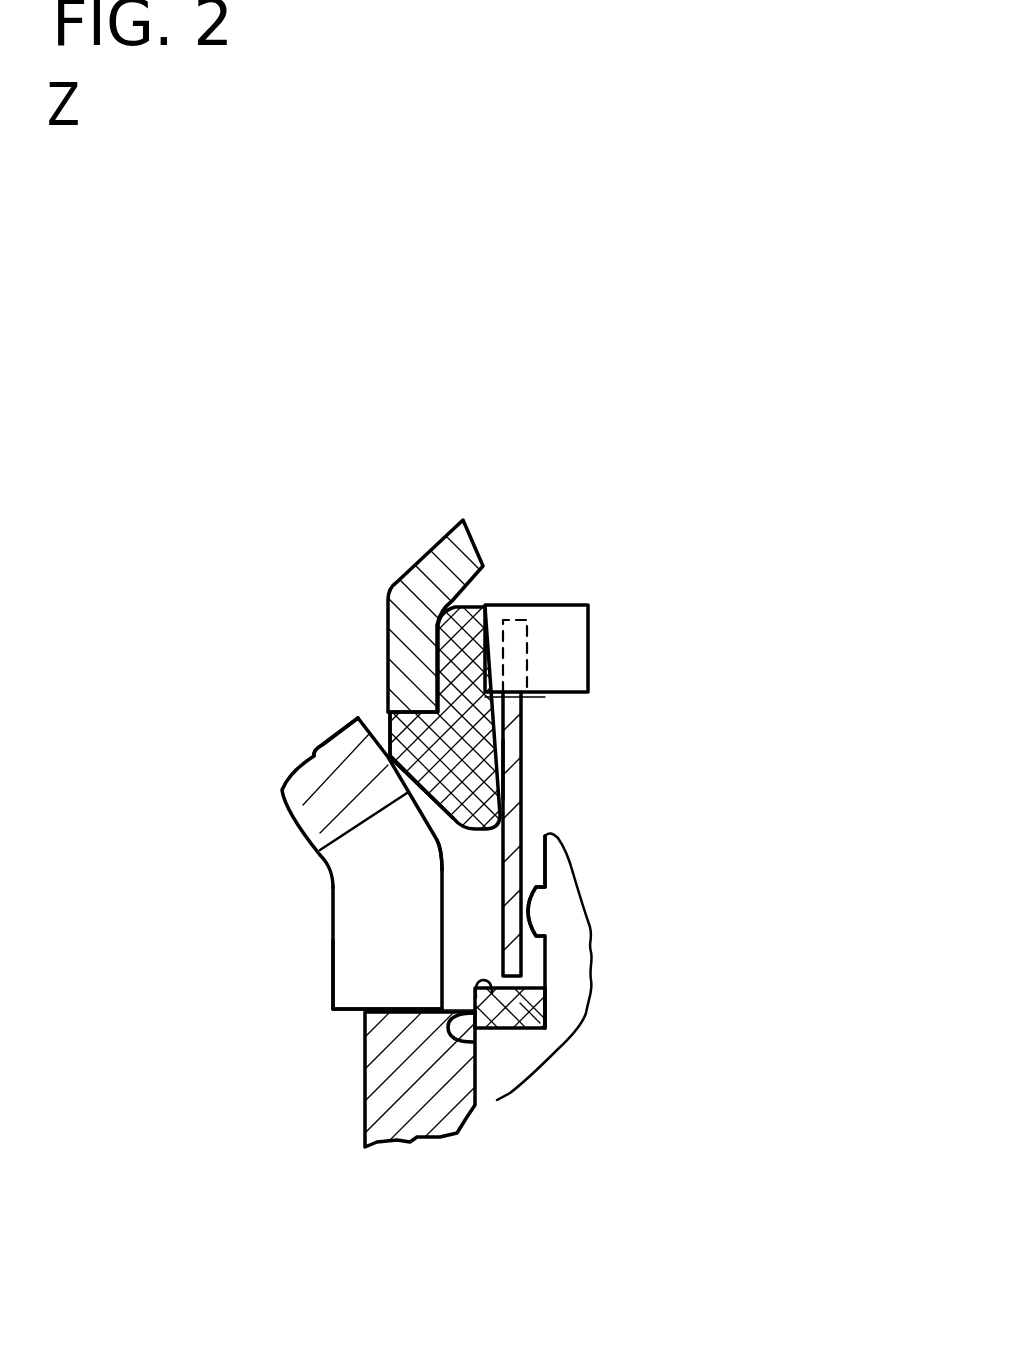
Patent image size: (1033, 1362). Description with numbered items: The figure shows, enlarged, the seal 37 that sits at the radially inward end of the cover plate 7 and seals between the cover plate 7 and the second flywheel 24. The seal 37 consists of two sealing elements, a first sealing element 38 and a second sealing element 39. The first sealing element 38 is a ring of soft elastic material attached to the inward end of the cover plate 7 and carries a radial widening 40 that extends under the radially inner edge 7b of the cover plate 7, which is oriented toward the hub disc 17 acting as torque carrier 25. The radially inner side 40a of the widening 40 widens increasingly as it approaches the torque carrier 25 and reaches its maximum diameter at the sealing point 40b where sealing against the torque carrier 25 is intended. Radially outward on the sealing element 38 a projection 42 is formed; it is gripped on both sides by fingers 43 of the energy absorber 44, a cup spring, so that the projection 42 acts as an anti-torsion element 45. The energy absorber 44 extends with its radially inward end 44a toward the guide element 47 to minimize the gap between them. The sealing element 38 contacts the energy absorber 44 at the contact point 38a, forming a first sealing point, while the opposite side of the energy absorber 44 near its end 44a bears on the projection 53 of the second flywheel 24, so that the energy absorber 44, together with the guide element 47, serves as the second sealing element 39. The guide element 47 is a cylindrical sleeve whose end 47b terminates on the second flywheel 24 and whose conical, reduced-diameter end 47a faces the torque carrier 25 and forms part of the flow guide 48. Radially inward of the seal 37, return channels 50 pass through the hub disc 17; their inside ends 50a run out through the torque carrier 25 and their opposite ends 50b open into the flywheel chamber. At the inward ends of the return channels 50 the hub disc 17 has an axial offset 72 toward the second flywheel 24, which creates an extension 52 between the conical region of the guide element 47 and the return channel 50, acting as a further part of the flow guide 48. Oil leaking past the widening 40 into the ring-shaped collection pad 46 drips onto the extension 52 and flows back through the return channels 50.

The cover plate 7 is at (452, 562).
The radially inner edge 7b is at (405, 706).
The hub disc 17 is at (303, 785).
The second flywheel 24 is at (520, 1070).
The torque carrier 25 is at (327, 733).
The seal 37 is at (612, 783).
The first sealing element 38 is at (333, 872).
The contact point 38a is at (522, 775).
The second sealing element 39 is at (547, 962).
The radial widening 40 is at (445, 790).
The radially inner side 40a is at (400, 788).
The sealing point 40b is at (383, 757).
The projection 42 is at (568, 635).
The fingers 43 is at (500, 697).
The energy absorber 44 is at (527, 825).
The radially inward end 44a is at (532, 917).
The anti-torsion element 45 is at (535, 623).
The ring-shaped collection pad 46 is at (467, 882).
The guide element 47 is at (550, 1018).
The conical end 47a is at (472, 1042).
The end on second flywheel 47b is at (552, 992).
The flow guide 48 is at (530, 1013).
The return channels 50 is at (352, 947).
The inside ends 50a is at (340, 1015).
The opposite ends 50b is at (332, 1000).
The extension 52 is at (470, 1006).
The projection 53 is at (583, 903).
The axial offset 72 is at (365, 1077).